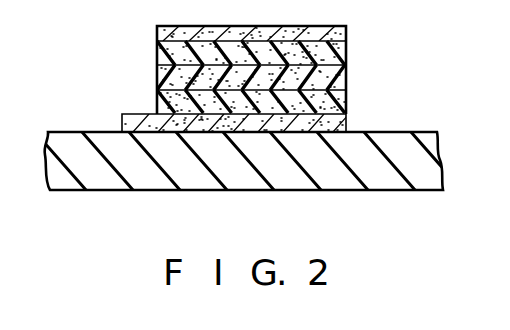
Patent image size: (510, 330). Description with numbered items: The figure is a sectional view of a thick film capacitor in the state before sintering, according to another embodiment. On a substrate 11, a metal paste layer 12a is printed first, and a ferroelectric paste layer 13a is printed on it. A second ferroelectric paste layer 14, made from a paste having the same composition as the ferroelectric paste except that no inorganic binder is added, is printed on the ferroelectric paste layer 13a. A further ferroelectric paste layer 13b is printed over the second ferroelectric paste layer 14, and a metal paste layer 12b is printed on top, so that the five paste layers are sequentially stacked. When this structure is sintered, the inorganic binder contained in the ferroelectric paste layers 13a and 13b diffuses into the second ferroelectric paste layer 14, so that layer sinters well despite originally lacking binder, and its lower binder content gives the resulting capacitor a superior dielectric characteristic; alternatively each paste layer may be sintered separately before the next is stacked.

The substrate 11 is at (440, 160).
The metal paste layer 12a is at (348, 122).
The metal paste layer 12b is at (348, 27).
The ferroelectric paste layer 13a is at (348, 95).
The ferroelectric paste layer 13b is at (348, 46).
The second ferroelectric paste layer 14 is at (348, 69).